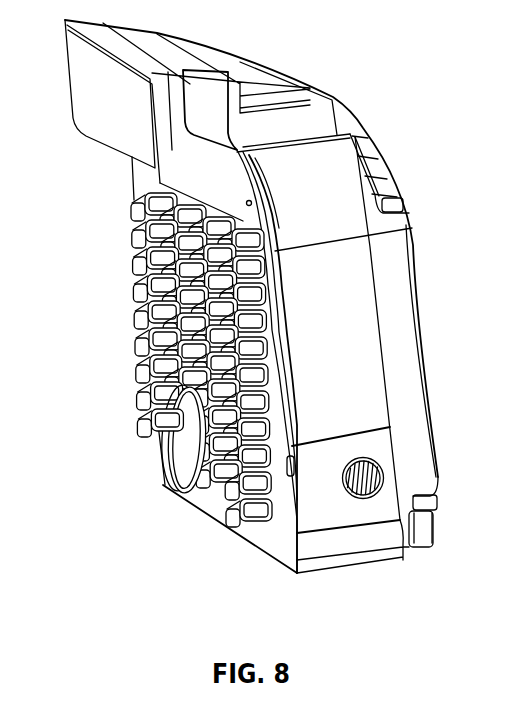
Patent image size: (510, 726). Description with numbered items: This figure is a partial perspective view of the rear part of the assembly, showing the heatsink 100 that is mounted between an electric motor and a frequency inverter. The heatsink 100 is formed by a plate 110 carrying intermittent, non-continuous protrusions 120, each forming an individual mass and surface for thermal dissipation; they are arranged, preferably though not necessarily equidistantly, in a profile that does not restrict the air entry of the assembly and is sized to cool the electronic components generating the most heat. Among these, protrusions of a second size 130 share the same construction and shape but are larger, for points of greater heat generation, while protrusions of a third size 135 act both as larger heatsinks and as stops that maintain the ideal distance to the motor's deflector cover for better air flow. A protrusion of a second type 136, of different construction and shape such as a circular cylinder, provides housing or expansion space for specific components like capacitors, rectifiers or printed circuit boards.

The heatsink 100 is at (297, 573).
The plate 110 is at (280, 533).
The protrusions 120 is at (130, 226).
The protrusions of a second size 130 is at (135, 338).
The protrusions of a third size 135 is at (142, 365).
The protrusions of a second type 136 is at (188, 473).